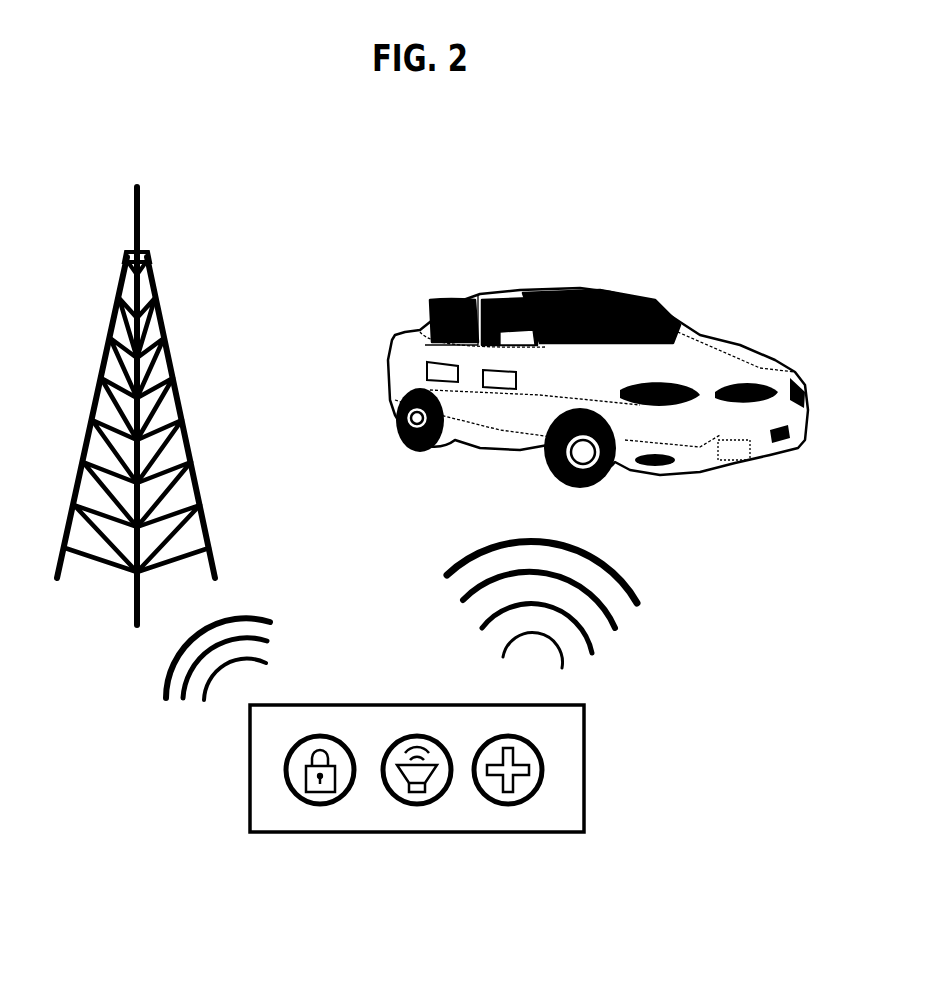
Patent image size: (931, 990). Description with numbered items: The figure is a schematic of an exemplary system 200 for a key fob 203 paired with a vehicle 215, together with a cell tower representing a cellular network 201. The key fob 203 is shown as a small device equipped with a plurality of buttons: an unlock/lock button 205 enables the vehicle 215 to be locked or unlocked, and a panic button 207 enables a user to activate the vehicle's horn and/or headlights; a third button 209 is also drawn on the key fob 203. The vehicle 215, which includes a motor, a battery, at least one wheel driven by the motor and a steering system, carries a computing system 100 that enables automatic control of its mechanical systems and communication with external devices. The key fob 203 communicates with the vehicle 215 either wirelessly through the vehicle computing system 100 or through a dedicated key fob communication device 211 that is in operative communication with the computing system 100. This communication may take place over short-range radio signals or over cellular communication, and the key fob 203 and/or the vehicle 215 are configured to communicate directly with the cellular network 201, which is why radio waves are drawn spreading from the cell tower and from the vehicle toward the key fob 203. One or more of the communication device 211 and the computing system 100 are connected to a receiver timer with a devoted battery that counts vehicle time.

The system 200 is at (716, 163).
The cellular network 201 is at (121, 249).
The vehicle 215 is at (612, 294).
The communication device 211 is at (450, 381).
The computing system 100 is at (515, 389).
The key fob 203 is at (586, 768).
The unlock/lock button 205 is at (291, 790).
The panic button 207 is at (418, 736).
The additional function button 209 is at (535, 792).